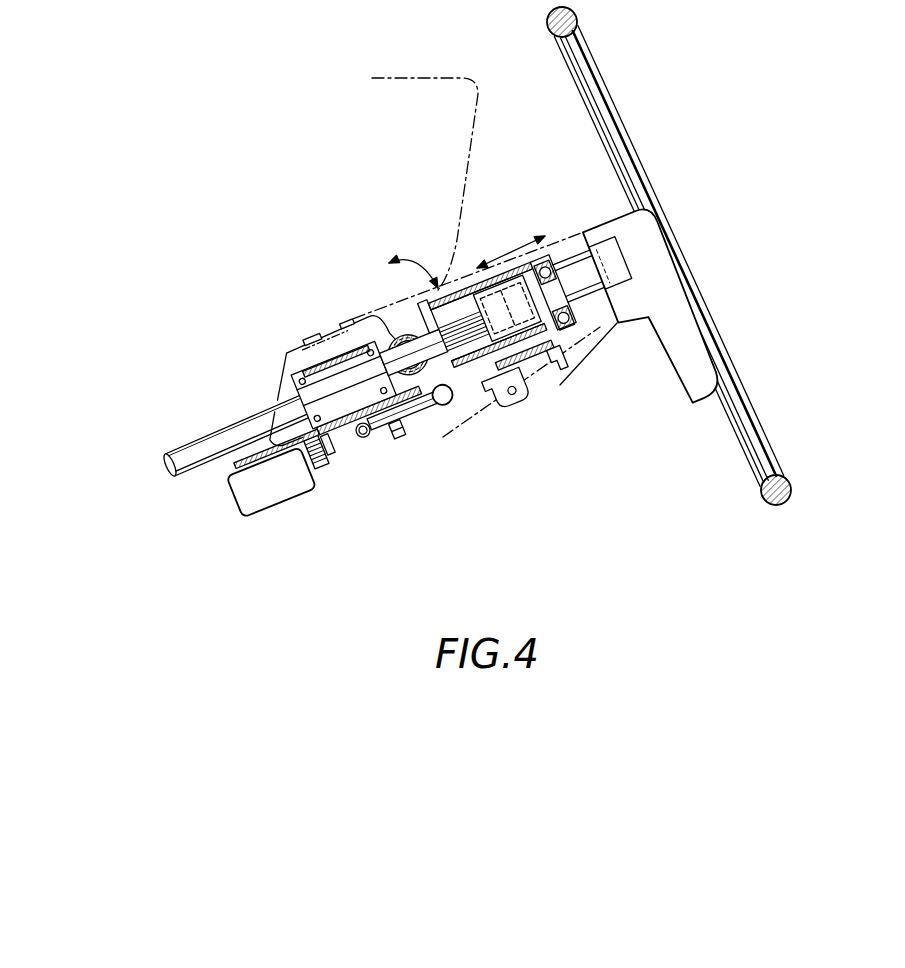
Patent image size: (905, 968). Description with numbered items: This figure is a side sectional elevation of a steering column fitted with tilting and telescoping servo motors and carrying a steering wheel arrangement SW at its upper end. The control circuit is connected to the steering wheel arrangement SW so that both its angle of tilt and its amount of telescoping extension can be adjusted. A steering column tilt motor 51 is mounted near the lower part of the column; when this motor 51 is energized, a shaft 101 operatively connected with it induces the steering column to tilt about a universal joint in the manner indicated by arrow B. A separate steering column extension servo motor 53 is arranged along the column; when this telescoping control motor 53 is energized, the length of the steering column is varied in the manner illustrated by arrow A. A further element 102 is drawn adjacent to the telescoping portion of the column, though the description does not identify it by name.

The steering wheel arrangement SW is at (630, 153).
The steering column tilt motor 51 is at (278, 490).
The steering column extension servo motor 53 is at (500, 397).
The shaft 101 is at (387, 420).
The telescopic shaft 102 is at (537, 370).
The arrow A is at (511, 250).
The arrow B is at (412, 276).